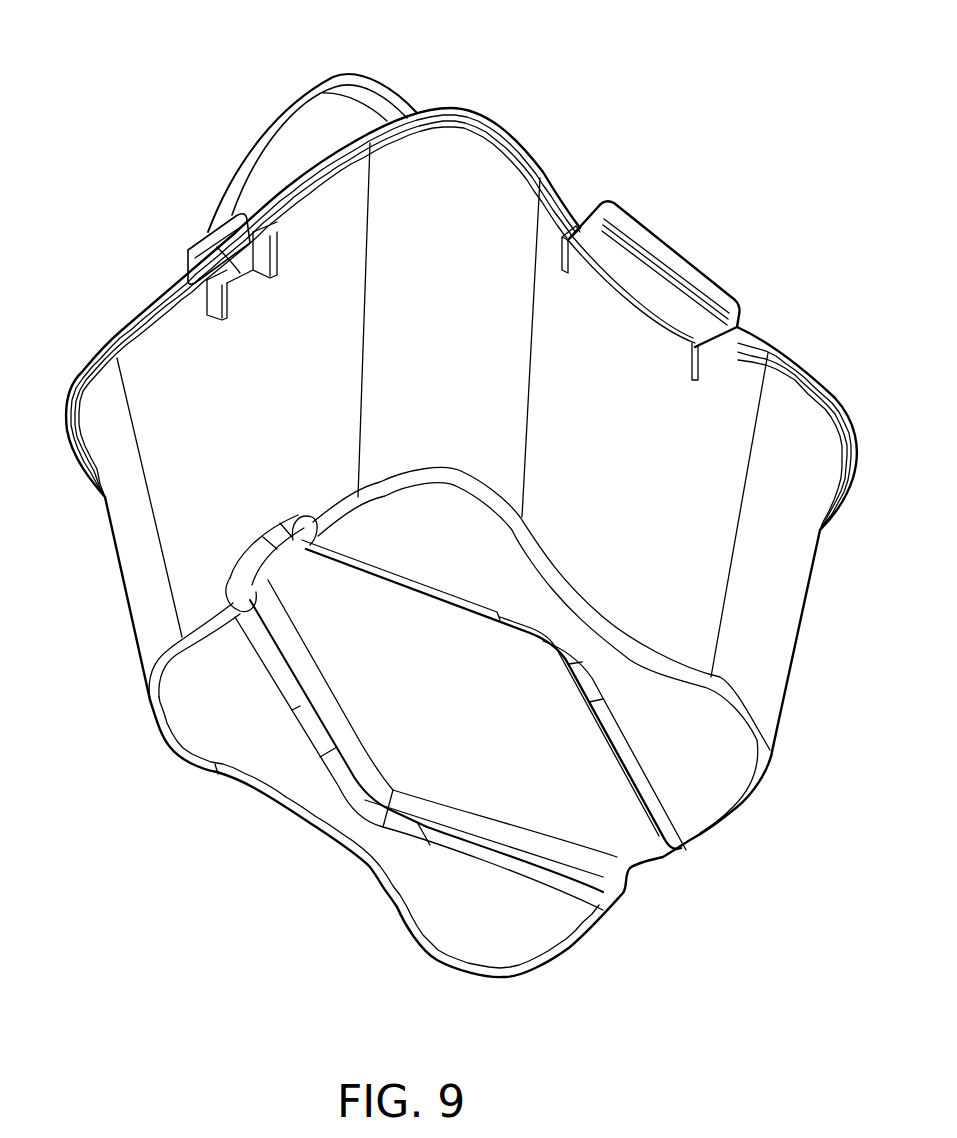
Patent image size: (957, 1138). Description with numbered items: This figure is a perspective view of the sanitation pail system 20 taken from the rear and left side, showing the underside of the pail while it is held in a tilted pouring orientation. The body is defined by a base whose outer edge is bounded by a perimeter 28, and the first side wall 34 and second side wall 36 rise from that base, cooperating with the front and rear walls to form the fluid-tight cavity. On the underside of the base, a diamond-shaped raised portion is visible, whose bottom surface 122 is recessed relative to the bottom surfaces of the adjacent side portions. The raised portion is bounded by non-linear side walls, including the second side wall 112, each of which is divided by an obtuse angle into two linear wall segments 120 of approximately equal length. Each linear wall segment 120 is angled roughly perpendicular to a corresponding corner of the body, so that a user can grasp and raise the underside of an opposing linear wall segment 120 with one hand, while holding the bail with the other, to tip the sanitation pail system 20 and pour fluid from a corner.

The sanitation pail system 20 is at (800, 94).
The first side wall 34 is at (198, 383).
The perimeter 28 is at (455, 481).
The second side wall 36 is at (600, 927).
The second side wall 112 is at (576, 682).
The linear wall segment 120 is at (634, 788).
The bottom surface 122 is at (411, 650).